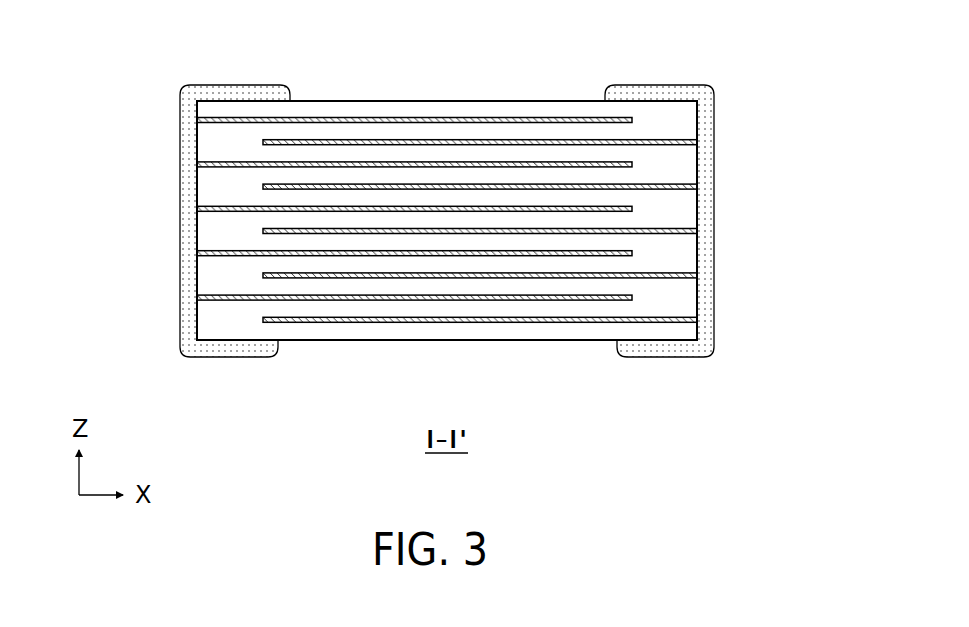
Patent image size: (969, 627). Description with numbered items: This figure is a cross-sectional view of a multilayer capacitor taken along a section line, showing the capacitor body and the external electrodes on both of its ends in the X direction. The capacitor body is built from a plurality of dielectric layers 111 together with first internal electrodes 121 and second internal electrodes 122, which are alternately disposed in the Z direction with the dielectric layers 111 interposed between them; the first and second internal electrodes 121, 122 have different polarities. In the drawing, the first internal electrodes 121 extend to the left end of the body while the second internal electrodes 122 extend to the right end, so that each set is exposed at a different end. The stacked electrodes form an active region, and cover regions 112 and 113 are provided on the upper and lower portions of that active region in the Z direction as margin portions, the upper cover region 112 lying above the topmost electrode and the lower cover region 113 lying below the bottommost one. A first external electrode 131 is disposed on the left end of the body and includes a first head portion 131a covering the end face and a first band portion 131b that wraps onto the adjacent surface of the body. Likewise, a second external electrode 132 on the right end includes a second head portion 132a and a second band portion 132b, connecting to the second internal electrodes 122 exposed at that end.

The dielectric layer 111 is at (677, 165).
The cover region 112 is at (453, 108).
The cover region 113 is at (475, 333).
The first internal electrode 121 is at (343, 117).
The second internal electrode 122 is at (558, 139).
The first external electrode 131 is at (160, 236).
The first head portion 131a is at (187, 238).
The first band portion 131b is at (186, 363).
The second external electrode 132 is at (735, 236).
The second head portion 132a is at (703, 233).
The second band portion 132b is at (709, 364).